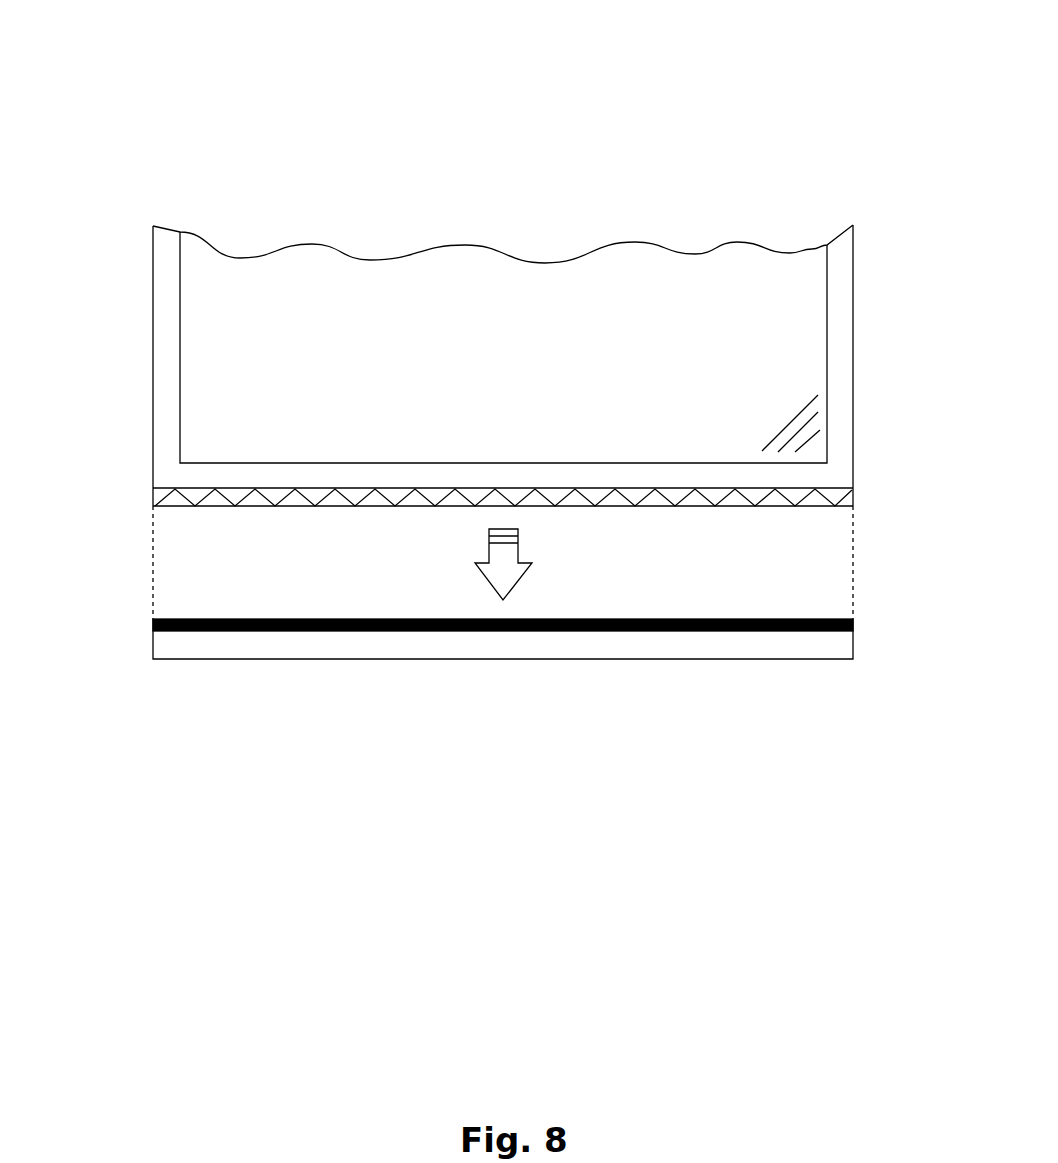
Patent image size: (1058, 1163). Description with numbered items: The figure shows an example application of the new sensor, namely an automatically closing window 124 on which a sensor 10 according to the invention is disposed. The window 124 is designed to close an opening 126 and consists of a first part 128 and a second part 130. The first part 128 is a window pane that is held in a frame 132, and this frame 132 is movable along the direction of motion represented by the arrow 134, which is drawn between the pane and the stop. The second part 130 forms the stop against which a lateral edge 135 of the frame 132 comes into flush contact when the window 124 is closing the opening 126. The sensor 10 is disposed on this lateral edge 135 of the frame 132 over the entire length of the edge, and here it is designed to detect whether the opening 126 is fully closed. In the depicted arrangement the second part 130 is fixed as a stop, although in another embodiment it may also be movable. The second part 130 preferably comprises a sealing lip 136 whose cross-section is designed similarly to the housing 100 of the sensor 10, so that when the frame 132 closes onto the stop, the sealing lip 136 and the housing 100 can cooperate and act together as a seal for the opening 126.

The automatically closing window 124 is at (518, 128).
The first part 128 is at (724, 210).
The frame 132 is at (843, 308).
The sensor 10 is at (131, 493).
The housing 100 is at (845, 500).
The lateral edge 135 is at (315, 492).
The arrow 134 is at (500, 578).
The sealing lip 136 is at (855, 625).
The second part 130 is at (696, 670).
The opening 126 is at (170, 560).